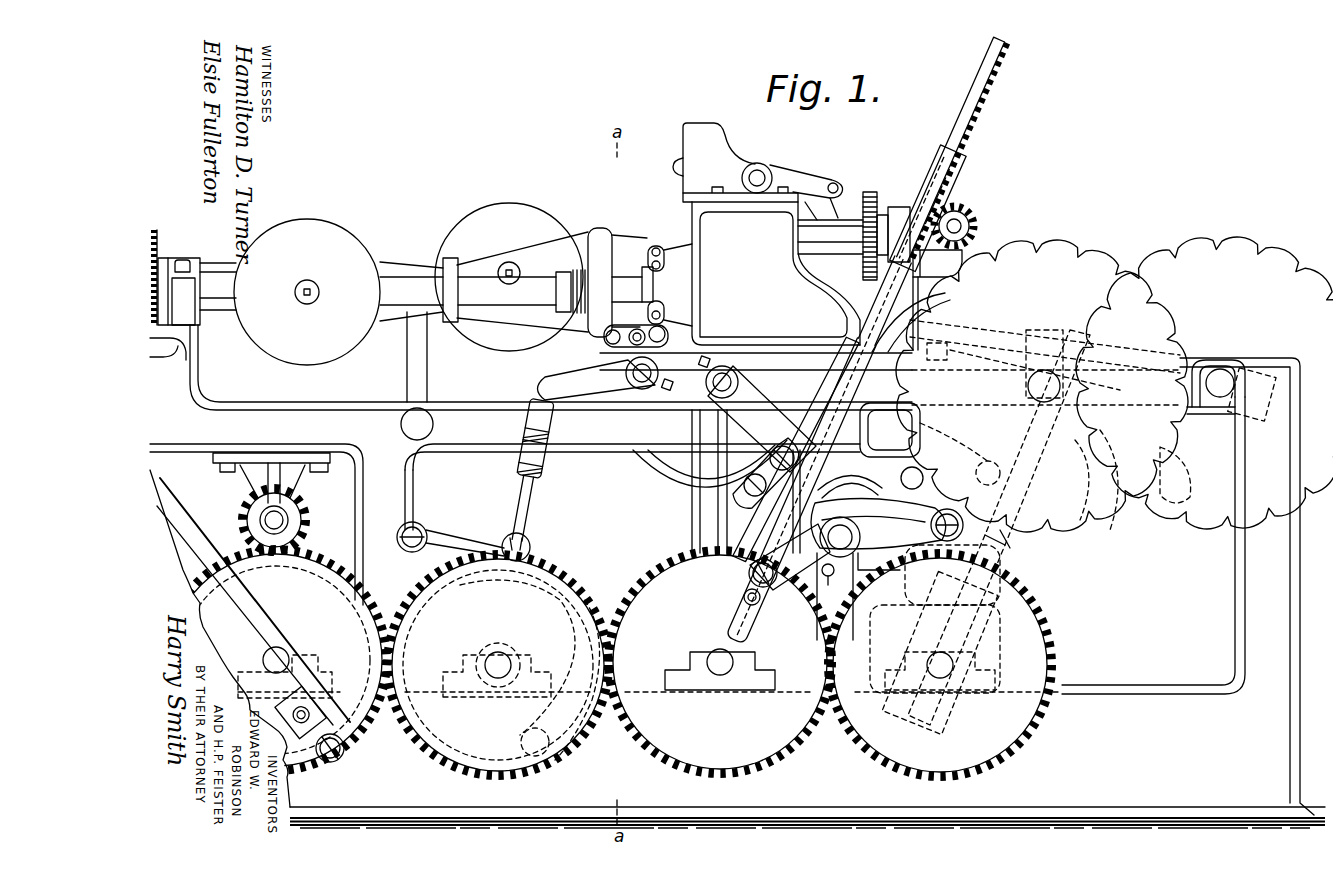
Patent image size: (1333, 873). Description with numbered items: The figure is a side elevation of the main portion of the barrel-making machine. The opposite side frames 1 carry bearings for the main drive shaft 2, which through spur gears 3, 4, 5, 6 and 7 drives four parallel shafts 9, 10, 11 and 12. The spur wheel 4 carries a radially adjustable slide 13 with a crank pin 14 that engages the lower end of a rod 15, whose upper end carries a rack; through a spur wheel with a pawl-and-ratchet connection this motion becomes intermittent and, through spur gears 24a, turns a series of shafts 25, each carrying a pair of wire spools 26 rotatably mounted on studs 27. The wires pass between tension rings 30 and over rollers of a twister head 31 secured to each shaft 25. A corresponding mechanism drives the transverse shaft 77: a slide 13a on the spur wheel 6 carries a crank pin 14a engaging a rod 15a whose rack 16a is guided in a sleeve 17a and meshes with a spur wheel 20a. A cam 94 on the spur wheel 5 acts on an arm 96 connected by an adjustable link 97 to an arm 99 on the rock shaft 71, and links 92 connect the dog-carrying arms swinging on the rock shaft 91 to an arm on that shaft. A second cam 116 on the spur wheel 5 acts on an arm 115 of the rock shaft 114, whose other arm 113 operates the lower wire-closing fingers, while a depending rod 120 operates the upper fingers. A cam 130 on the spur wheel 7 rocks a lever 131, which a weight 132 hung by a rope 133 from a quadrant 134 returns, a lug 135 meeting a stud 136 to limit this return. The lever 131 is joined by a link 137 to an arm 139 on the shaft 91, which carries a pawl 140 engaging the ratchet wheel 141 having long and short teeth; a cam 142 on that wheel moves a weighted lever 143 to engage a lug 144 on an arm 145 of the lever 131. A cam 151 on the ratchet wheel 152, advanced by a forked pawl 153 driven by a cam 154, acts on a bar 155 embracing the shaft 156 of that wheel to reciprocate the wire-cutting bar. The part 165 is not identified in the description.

The side frames 1 is at (737, 475).
The main drive shaft 2 is at (271, 502).
The spur gear 3 is at (243, 516).
The spur wheel 4 is at (276, 660).
The spur wheel 5 is at (498, 665).
The spur wheel 6 is at (720, 662).
The spur wheel 7 is at (940, 665).
The parallel shaft 9 is at (280, 656).
The parallel shaft 10 is at (497, 670).
The parallel shaft 11 is at (720, 662).
The parallel shaft 12 is at (940, 671).
The radially adjustable slide 13 is at (326, 730).
The crank pin 14 is at (338, 758).
The rod 15 is at (195, 568).
The rod 15a is at (870, 330).
The rack 16a is at (970, 118).
The sleeve 17a is at (950, 178).
The spur wheel 20a is at (975, 248).
The spur gears 24a is at (177, 274).
The shaft 25 is at (392, 268).
The spool 26 is at (408, 284).
The stud 27 is at (298, 298).
The tension ring 30 is at (617, 282).
The twister head 31 is at (652, 250).
The rock shaft 71 is at (645, 388).
The transverse shaft 77 is at (970, 220).
The rock shaft 91 is at (716, 390).
The link 92 is at (604, 338).
The cam 94 is at (500, 540).
The arm 96 is at (445, 532).
The adjustable link 97 is at (530, 498).
The arm 99 is at (624, 378).
The arm 113 is at (672, 665).
The rock shaft 114 is at (590, 612).
The arm 115 is at (560, 742).
The cam 116 is at (572, 640).
The depending rod 120 is at (812, 268).
The cam 130 is at (960, 528).
The lever 131 is at (856, 536).
The weight 132 is at (935, 649).
The rope or wire 133 is at (893, 500).
The quadrant 134 is at (872, 504).
The lug 135 is at (825, 557).
The stud 136 is at (834, 584).
The link 137 is at (752, 455).
The arm 139 is at (762, 419).
The pawl 140 is at (818, 432).
The ratchet wheel 141 is at (1042, 386).
The cam 142 is at (1019, 476).
The weighted lever 143 is at (895, 449).
The lug 144 is at (890, 430).
The arm 145 is at (850, 474).
The cam 151 is at (1175, 480).
The ratchet wheel 152 is at (1204, 383).
The pawl 153 is at (1005, 540).
The cam 154 is at (950, 706).
The bar 155 is at (995, 345).
The shaft 156 is at (1220, 398).
The pinion 165 is at (868, 193).
The slide 13a is at (760, 600).
The crank pin 14a is at (779, 560).